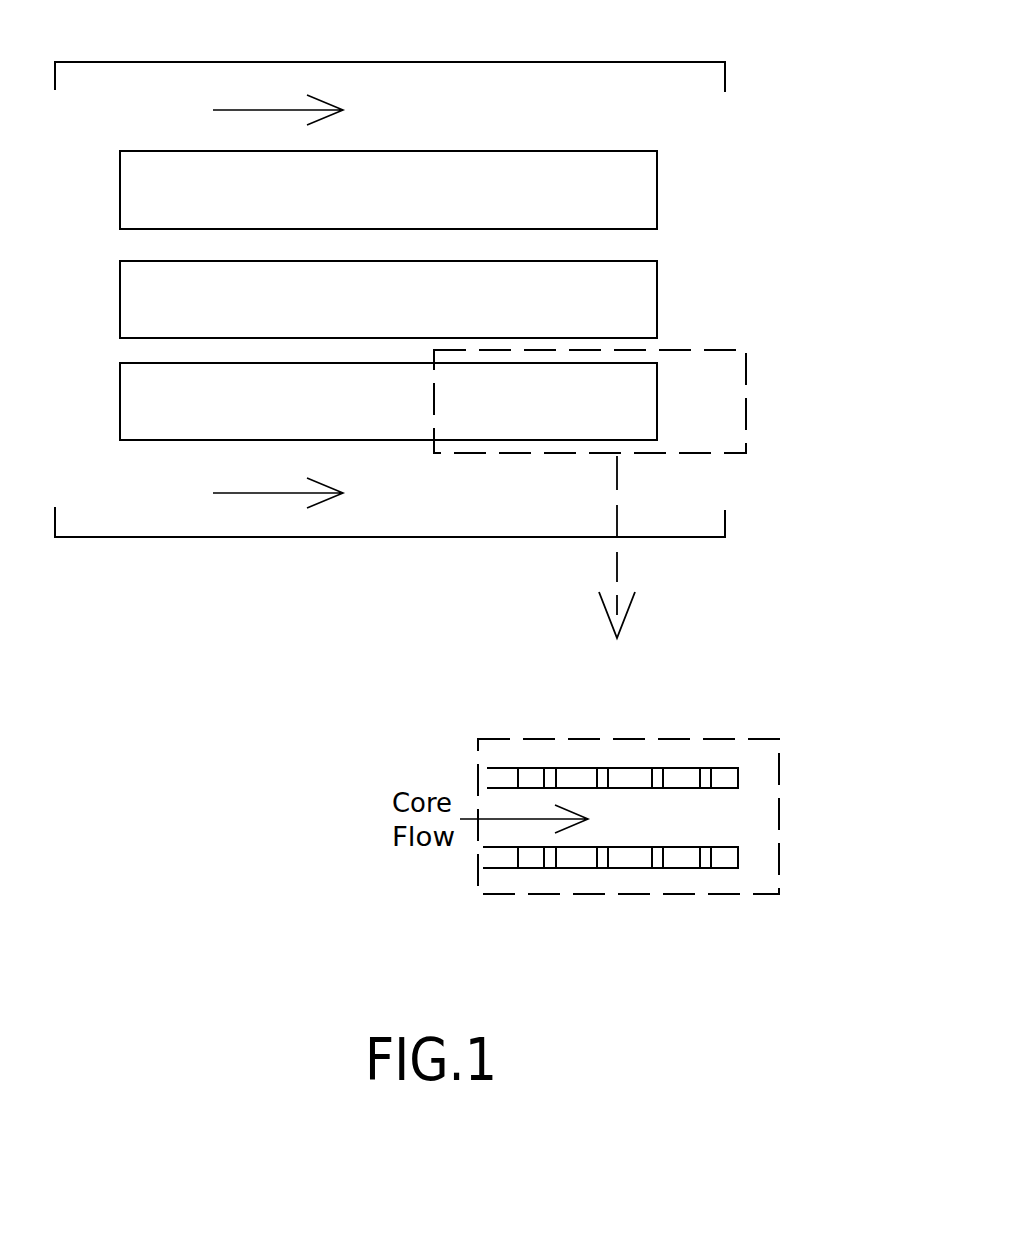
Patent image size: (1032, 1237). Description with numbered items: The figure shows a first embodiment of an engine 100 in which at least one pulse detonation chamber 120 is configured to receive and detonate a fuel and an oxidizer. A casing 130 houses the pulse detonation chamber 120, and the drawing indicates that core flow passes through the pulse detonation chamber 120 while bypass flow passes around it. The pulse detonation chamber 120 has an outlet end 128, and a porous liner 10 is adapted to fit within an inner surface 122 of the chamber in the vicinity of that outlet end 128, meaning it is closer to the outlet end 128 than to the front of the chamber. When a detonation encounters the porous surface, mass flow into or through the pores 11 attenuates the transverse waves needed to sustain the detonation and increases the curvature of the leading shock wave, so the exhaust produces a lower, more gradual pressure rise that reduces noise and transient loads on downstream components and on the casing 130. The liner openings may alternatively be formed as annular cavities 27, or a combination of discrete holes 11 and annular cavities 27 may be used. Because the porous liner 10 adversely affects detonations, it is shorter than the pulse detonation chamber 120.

The engine 100 is at (902, 66).
The outlet end 128 is at (657, 212).
The pulse detonation chamber 120 is at (138, 418).
The casing 130 is at (678, 537).
The inner surface 122 is at (612, 924).
The porous liner 10 is at (583, 857).
The pores 11 is at (727, 923).
The annular cavities 27 is at (710, 862).